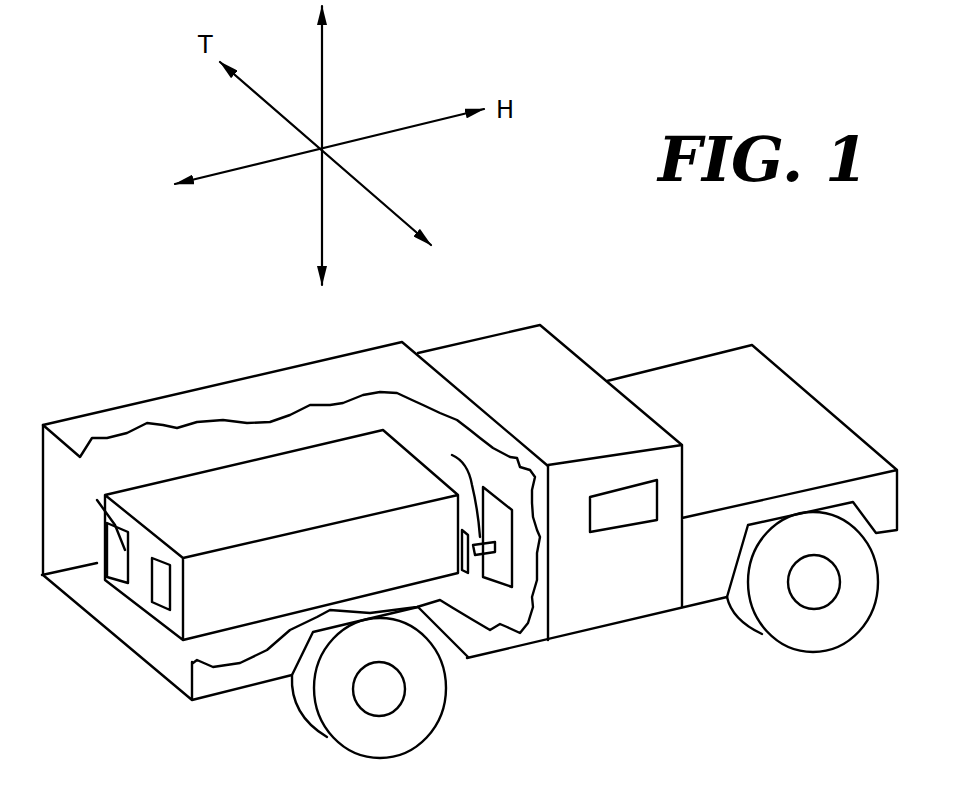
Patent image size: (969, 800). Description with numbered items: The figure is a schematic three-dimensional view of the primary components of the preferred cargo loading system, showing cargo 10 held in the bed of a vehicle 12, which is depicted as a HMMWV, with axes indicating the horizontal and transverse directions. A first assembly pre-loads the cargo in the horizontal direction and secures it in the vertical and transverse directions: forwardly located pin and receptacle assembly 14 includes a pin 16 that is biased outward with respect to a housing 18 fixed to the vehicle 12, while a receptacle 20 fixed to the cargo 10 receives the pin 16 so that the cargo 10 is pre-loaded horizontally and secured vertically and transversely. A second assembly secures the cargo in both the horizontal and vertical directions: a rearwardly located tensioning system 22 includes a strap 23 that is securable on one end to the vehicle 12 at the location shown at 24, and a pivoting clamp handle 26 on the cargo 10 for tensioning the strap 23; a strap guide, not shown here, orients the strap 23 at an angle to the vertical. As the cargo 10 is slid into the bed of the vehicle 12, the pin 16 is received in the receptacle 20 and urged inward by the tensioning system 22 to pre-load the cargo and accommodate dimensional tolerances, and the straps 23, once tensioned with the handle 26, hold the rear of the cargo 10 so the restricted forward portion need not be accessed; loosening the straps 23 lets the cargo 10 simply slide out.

The cargo 10 is at (371, 486).
The vehicle 12 is at (522, 656).
The pin and receptacle assembly 14 is at (518, 575).
The pin 16 is at (455, 487).
The housing 18 is at (503, 542).
The receptacle 20 is at (462, 548).
The tensioning system 22 is at (139, 621).
The strap 23 is at (144, 540).
The strap securement point on vehicle 24 is at (92, 652).
The pivoting clamp handle 26 is at (115, 530).